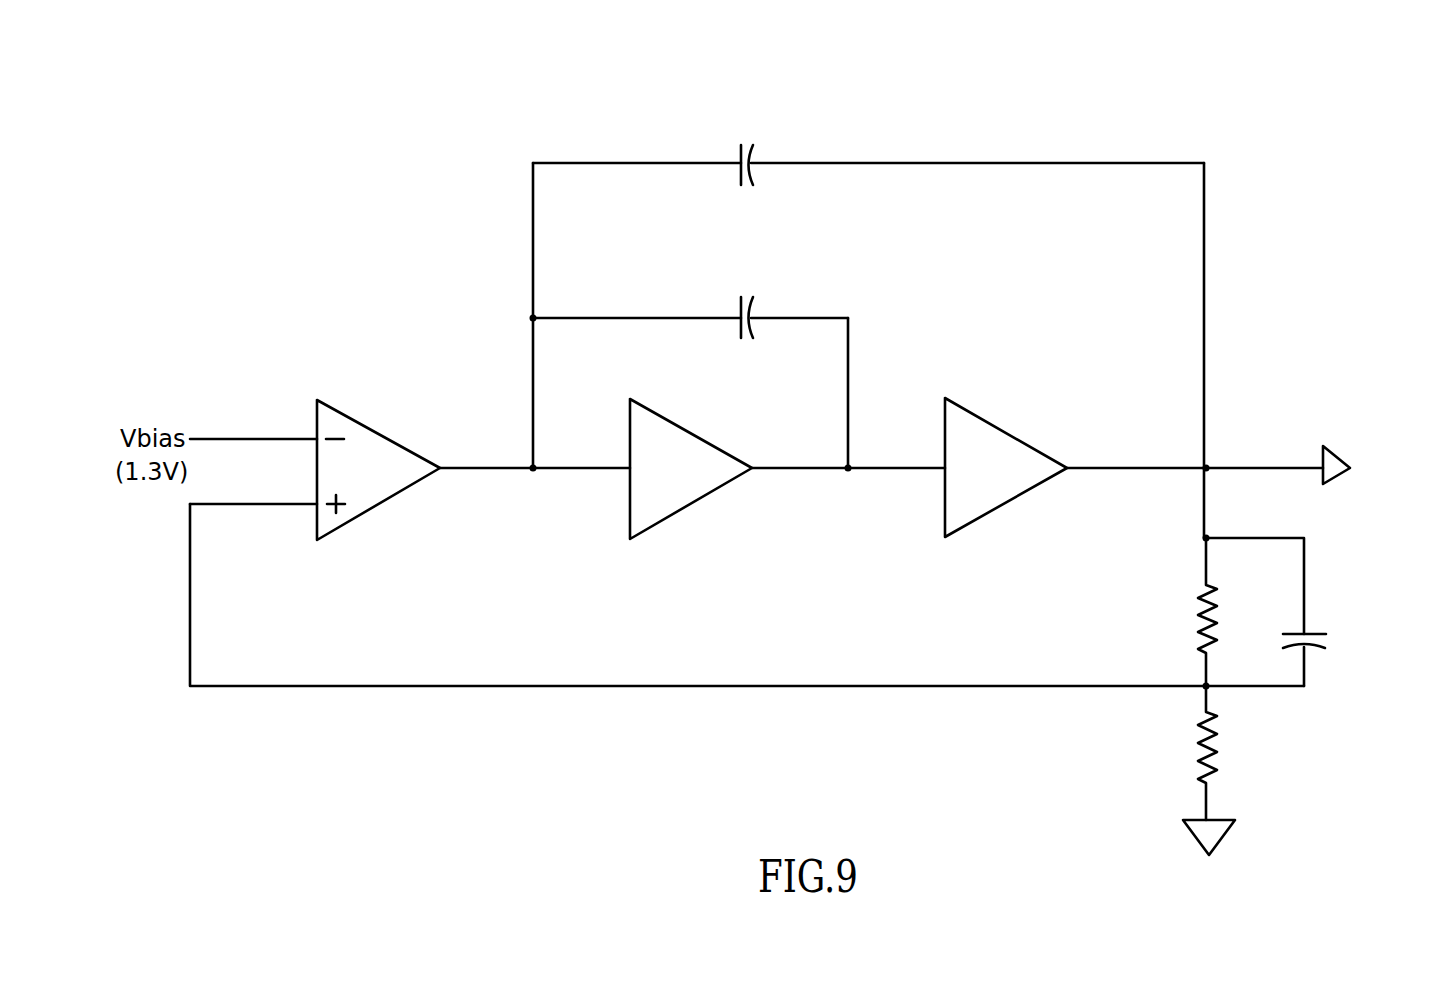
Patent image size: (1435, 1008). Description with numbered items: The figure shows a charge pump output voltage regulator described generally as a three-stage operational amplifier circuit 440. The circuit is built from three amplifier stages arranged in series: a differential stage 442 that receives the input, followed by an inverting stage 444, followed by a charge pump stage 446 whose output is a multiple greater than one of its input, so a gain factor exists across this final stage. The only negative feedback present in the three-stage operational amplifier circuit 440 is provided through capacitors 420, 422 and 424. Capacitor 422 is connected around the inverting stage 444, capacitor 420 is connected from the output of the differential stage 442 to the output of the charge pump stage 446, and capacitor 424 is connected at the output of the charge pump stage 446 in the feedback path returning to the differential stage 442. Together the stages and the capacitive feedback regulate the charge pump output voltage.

The 3-stage operational amplifier circuit 440 is at (1306, 129).
The differential stage 442 is at (380, 430).
The inverting stage 444 is at (690, 430).
The charge pump stage 446 is at (1006, 428).
The capacitor 420 is at (740, 157).
The capacitor 422 is at (740, 312).
The capacitor 424 is at (1314, 634).